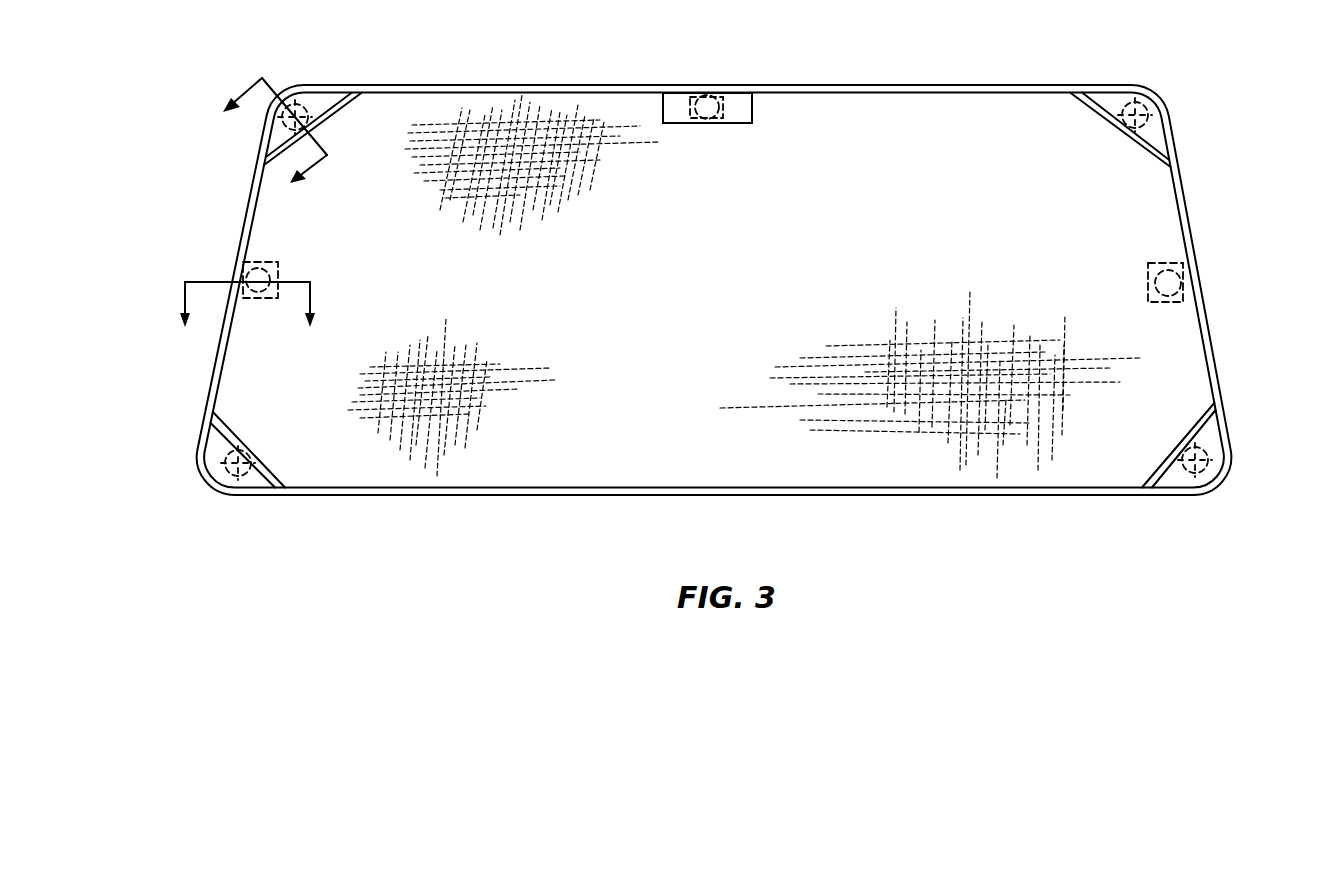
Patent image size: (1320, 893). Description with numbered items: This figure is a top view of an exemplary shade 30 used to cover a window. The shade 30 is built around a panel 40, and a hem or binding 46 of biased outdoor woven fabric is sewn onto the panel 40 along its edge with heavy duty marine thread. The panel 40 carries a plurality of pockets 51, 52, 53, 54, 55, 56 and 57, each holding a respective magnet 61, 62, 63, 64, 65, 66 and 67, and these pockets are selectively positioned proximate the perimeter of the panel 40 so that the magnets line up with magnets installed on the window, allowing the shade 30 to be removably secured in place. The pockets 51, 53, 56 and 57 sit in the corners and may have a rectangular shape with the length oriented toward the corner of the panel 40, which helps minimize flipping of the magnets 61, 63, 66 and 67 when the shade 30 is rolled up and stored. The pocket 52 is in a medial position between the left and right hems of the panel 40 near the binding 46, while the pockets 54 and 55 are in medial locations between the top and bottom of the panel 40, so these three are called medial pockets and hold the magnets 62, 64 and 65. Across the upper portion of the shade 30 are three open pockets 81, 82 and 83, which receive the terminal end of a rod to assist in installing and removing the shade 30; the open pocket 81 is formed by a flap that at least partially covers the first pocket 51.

The shade 30 is at (146, 145).
The panel 40 is at (728, 289).
The binding 46 is at (540, 488).
The first pocket 51 is at (308, 125).
The pocket 52 is at (720, 95).
The pocket 53 is at (1150, 113).
The medial pocket 54 is at (252, 270).
The pocket 55 is at (1177, 267).
The pocket 56 is at (230, 465).
The pocket 57 is at (1193, 473).
The magnet 61 is at (298, 108).
The magnet 62 is at (707, 108).
The magnet 63 is at (1137, 110).
The magnet 64 is at (257, 278).
The magnet 65 is at (1175, 285).
The magnet 66 is at (233, 463).
The magnet 67 is at (1195, 445).
The open pocket 81 is at (320, 107).
The open pocket 82 is at (737, 115).
The open pocket 83 is at (1150, 140).